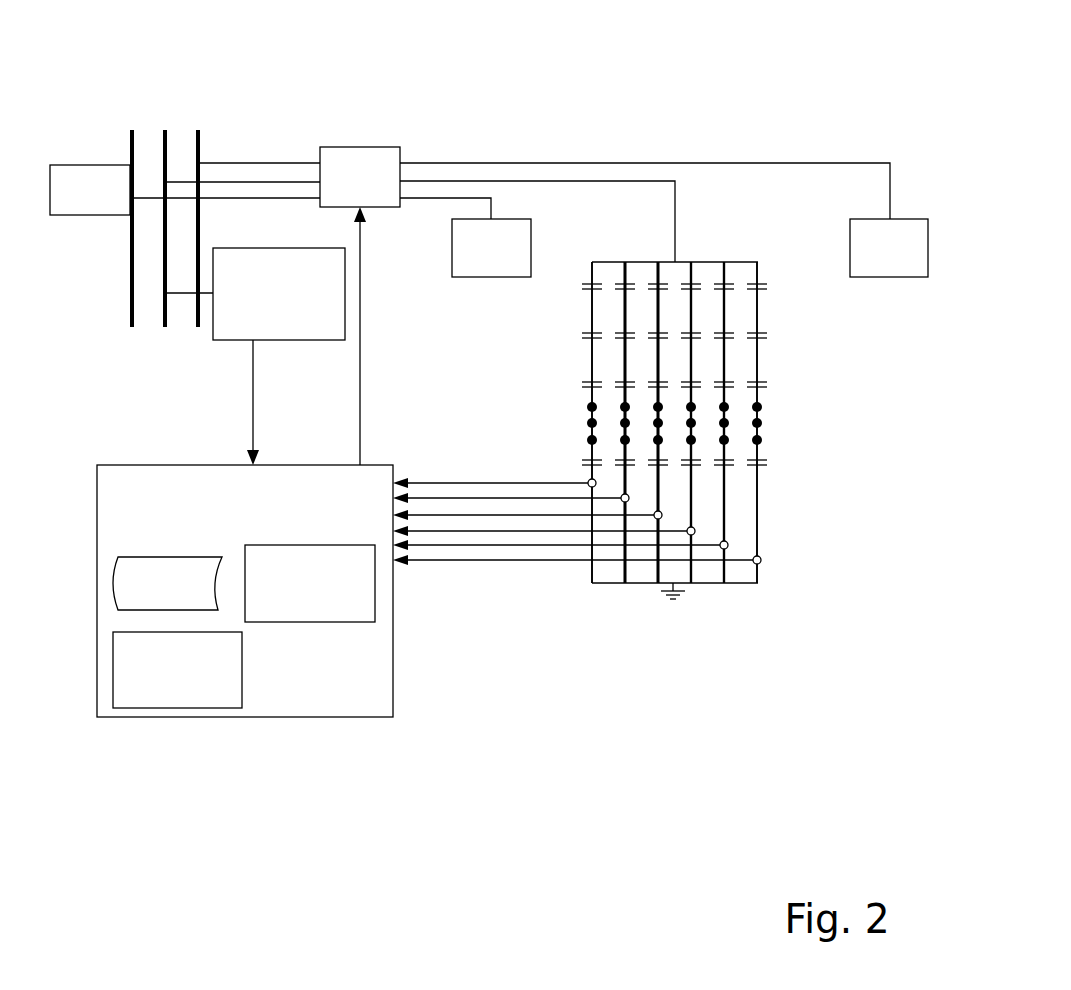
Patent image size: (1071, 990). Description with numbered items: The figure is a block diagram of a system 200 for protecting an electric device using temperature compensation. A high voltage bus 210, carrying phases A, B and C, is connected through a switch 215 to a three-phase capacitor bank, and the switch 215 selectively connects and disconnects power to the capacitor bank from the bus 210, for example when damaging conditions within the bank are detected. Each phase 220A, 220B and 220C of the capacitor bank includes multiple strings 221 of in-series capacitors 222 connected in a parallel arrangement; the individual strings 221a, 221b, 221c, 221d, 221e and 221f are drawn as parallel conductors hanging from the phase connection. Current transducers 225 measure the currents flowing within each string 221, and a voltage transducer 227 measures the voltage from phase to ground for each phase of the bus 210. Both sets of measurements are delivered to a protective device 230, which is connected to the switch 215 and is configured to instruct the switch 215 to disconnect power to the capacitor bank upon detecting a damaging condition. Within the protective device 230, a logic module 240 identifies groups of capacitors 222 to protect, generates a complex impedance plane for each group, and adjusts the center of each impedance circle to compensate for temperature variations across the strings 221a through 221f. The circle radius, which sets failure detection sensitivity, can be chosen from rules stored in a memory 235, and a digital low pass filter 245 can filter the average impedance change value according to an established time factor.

The system 200 is at (885, 35).
The high voltage bus 210 is at (127, 214).
The switch 215 is at (360, 177).
The phase of the capacitor bank 220A is at (491, 248).
The phase of the capacitor bank 220B is at (675, 261).
The phase of the capacitor bank 220C is at (889, 248).
The strings 221 is at (657, 320).
The string 221a is at (591, 265).
The string 221b is at (624, 268).
The string 221c is at (657, 268).
The string 221d is at (692, 268).
The string 221e is at (725, 268).
The string 221f is at (758, 277).
The capacitors 222 is at (762, 380).
The current transducers 225 is at (596, 484).
The voltage transducer 227 is at (255, 294).
The protective device 230 is at (245, 591).
The memory 235 is at (167, 583).
The logic module 240 is at (310, 583).
The low pass filter 245 is at (177, 670).